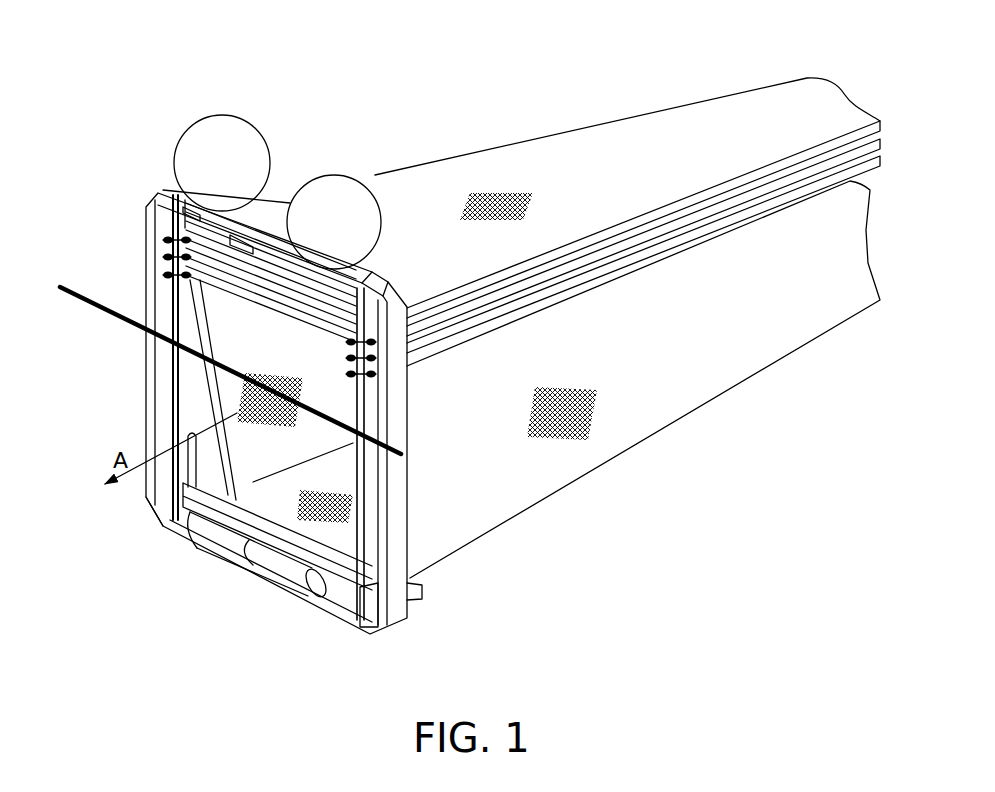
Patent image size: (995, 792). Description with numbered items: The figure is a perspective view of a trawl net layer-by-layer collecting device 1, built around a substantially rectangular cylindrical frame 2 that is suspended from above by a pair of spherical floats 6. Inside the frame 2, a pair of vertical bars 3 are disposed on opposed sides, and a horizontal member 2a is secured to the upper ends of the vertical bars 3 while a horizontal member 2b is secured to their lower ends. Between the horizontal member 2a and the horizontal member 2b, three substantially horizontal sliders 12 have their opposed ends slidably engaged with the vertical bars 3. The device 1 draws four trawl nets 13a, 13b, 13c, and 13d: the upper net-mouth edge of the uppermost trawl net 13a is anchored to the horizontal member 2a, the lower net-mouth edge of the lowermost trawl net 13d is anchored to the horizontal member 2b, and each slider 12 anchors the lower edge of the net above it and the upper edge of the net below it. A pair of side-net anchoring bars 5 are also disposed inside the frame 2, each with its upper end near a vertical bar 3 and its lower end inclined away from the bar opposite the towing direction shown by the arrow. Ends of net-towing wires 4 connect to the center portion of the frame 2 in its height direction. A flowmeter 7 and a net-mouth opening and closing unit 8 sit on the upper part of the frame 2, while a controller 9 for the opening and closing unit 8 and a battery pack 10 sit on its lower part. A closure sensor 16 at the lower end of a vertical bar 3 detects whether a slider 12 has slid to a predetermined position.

The trawl net layer-by-layer collecting device 1 is at (349, 94).
The frame 2 is at (365, 274).
The horizontal member 2a is at (178, 226).
The horizontal member 2b is at (158, 521).
The vertical bars 3 is at (172, 367).
The net-towing wires 4 is at (92, 302).
The side-net anchoring bars 5 is at (205, 398).
The floats 6 is at (220, 122).
The flowmeter 7 is at (168, 190).
The net-mouth opening and closing unit 8 is at (243, 238).
The controller 9 is at (216, 541).
The battery pack 10 is at (277, 571).
The sliders 12 is at (263, 283).
The trawl net 13a is at (703, 122).
The trawl net 13b is at (776, 183).
The trawl net 13c is at (820, 180).
The trawl net 13d is at (790, 320).
The closure sensor 16 is at (185, 434).